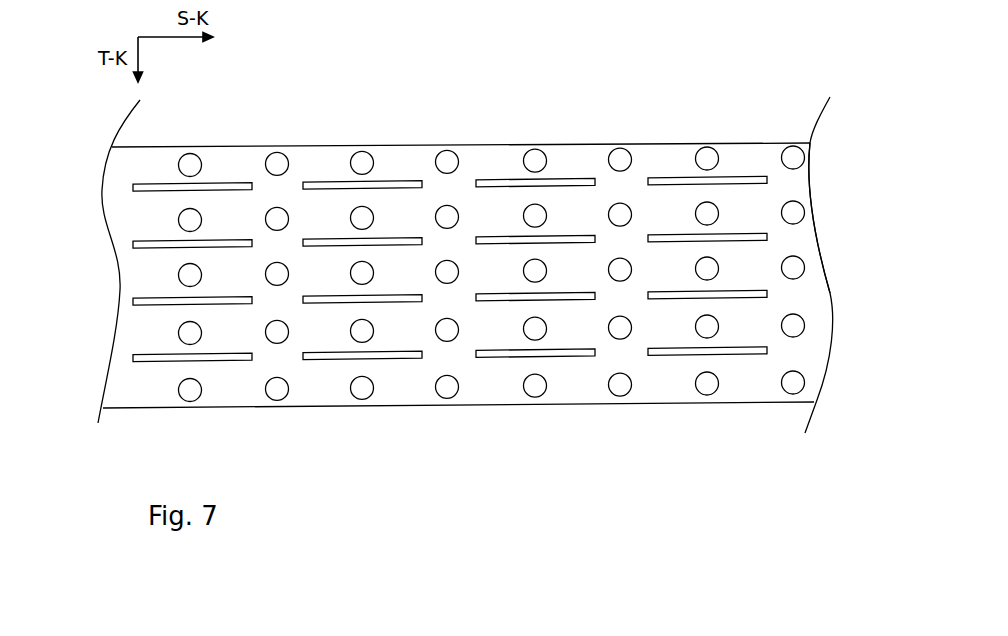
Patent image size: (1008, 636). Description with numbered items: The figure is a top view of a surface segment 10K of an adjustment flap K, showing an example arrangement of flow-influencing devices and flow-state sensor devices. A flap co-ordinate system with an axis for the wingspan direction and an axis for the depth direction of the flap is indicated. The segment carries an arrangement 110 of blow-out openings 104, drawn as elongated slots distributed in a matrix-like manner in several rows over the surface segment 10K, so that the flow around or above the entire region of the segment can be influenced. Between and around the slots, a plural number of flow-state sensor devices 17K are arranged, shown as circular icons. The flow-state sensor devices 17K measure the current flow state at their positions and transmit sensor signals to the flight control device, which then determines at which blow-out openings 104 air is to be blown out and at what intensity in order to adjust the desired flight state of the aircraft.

The adjustment flap K is at (768, 143).
The surface segment 10K is at (782, 182).
The arrangement of blow-out openings 110 is at (567, 165).
The blow-out openings 104 is at (148, 185).
The flow-state sensor device 17K is at (190, 213).